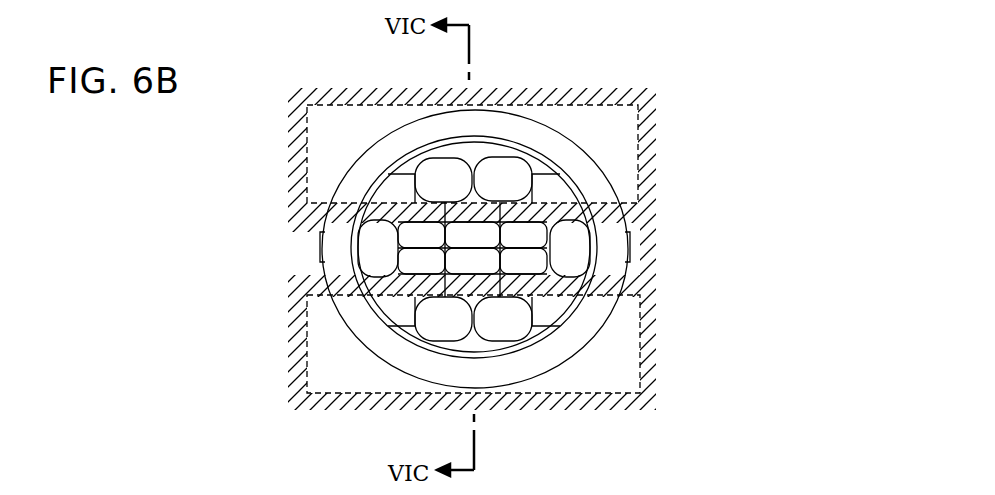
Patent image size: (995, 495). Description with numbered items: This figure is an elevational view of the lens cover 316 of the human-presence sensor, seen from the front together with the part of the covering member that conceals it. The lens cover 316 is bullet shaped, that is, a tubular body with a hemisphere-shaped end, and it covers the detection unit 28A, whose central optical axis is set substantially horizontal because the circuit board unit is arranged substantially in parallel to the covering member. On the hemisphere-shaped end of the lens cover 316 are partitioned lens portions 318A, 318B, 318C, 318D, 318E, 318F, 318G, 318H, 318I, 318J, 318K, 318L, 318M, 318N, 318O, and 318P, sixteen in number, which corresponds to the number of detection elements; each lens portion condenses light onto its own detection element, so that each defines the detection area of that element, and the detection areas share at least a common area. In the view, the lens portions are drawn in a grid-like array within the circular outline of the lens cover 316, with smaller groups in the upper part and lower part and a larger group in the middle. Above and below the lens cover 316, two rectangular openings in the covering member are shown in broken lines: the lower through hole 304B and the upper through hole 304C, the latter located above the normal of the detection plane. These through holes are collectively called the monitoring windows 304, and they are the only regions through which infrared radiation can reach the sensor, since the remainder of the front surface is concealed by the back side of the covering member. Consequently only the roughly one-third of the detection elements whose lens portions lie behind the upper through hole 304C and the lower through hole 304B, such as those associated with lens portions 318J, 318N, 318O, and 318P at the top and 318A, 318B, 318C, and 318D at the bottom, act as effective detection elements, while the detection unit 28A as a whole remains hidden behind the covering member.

The monitoring windows 304 is at (575, 249).
The through hole 304B is at (547, 316).
The through hole 304C is at (648, 122).
The detection unit 28A is at (384, 365).
The lens cover 316 is at (496, 357).
The lens portion 318A is at (427, 268).
The lens portion 318B is at (413, 345).
The lens portion 318C is at (530, 340).
The lens portion 318D is at (562, 296).
The lens portion 318E is at (375, 257).
The lens portion 318F is at (398, 317).
The lens portion 318G is at (452, 310).
The lens portion 318H is at (560, 322).
The lens portion 318I is at (572, 258).
The lens portion 318J is at (387, 190).
The lens portion 318K is at (417, 230).
The lens portion 318L is at (540, 192).
The lens portion 318M is at (528, 233).
The lens portion 318N is at (557, 190).
The lens portion 318O is at (437, 173).
The lens portion 318P is at (503, 170).